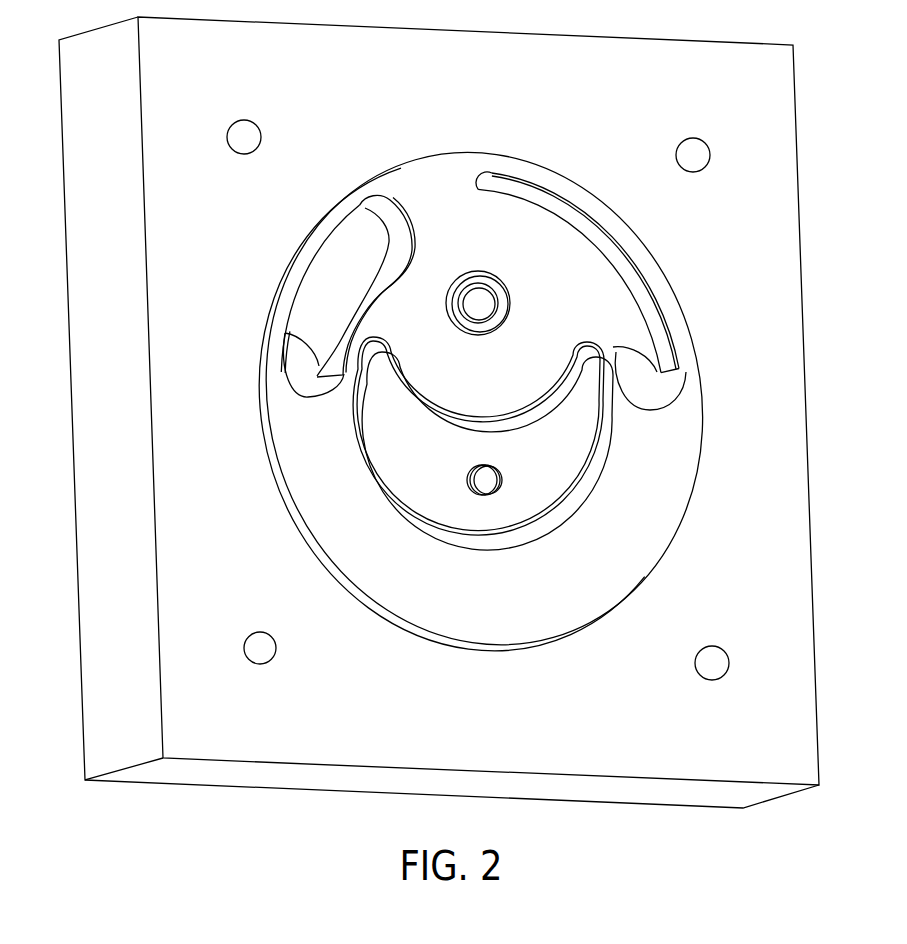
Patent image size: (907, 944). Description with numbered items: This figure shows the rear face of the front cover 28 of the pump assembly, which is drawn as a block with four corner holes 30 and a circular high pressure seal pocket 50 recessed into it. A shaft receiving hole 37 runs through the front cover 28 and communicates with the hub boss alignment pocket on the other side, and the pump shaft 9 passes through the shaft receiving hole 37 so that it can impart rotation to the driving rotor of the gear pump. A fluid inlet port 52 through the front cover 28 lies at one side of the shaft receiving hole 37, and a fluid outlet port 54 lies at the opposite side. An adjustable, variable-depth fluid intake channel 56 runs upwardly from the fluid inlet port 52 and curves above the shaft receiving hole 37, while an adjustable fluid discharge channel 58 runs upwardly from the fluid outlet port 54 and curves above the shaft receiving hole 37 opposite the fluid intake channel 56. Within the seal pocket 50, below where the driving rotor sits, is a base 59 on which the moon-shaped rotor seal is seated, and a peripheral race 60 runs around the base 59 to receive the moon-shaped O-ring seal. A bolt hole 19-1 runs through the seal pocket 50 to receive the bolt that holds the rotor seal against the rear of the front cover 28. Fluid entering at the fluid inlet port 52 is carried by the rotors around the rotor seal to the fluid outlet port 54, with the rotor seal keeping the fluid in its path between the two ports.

The front cover 28 is at (816, 175).
The mounting holes 30 is at (244, 120).
The high pressure seal pocket 50 is at (280, 498).
The shaft receiving hole 37 is at (503, 298).
The pump shaft 9 is at (484, 319).
The bolt hole 19-1 is at (484, 497).
The base 59 is at (583, 444).
The peripheral race 60 is at (577, 504).
The fluid intake channel 56 is at (620, 308).
The fluid inlet port 52 is at (663, 389).
The fluid discharge channel 58 is at (322, 262).
The fluid outlet port 54 is at (290, 366).